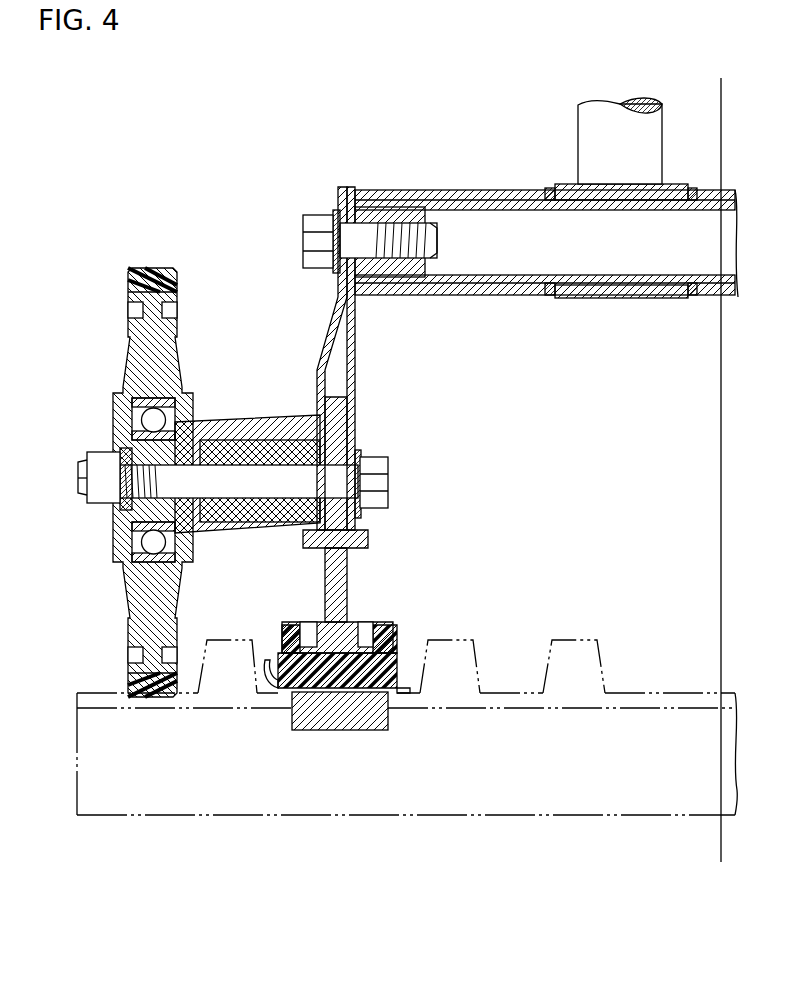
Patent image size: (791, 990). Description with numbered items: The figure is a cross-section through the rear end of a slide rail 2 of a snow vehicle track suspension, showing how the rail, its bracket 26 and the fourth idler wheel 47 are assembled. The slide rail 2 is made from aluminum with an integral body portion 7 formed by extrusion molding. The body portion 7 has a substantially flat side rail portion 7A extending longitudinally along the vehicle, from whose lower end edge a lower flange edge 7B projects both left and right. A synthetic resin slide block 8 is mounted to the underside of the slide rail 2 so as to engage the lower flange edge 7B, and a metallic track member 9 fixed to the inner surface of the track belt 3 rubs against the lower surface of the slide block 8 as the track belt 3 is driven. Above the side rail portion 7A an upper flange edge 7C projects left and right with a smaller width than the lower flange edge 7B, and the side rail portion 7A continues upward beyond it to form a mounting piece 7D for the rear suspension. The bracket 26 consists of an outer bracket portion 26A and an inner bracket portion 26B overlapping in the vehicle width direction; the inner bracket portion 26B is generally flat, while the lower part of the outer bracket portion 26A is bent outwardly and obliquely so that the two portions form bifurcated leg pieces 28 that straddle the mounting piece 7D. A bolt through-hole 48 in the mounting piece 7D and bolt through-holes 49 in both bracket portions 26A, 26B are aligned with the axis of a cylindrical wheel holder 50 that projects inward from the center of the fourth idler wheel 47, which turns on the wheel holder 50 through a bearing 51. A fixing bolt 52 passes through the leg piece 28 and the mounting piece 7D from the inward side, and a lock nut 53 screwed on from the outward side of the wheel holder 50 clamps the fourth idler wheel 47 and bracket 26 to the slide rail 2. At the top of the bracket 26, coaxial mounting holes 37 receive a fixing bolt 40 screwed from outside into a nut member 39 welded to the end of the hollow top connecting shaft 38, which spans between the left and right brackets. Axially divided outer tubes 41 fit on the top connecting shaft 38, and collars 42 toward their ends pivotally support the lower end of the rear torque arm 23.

The slide rail 2 is at (403, 592).
The track belt 3 is at (535, 815).
The body portion 7 is at (363, 618).
The side rail portion 7A is at (340, 636).
The lower flange edge 7B is at (345, 660).
The upper flange edge 7C is at (366, 541).
The mounting piece 7D is at (335, 410).
The slide block 8 is at (292, 685).
The track member 9 is at (378, 725).
The rear torque arm 23 is at (655, 131).
The bracket 26 is at (342, 331).
The outer bracket portion 26A is at (338, 187).
The inner bracket portion 26B is at (352, 187).
The leg piece 28 is at (320, 405).
The mounting hole 37 is at (340, 235).
The top connecting shaft 38 is at (512, 285).
The nut member 39 is at (385, 270).
The fixing bolt 40 is at (303, 245).
The outer tube 41 is at (523, 190).
The collar 42 is at (690, 188).
The fourth idler wheel 47 is at (155, 258).
The bolt through-hole 48 is at (388, 470).
The bolt through-hole 49 is at (320, 465).
The wheel holder 50 is at (252, 530).
The bearing 51 is at (132, 540).
The fixing bolt 52 is at (300, 500).
The lock nut 53 is at (96, 452).